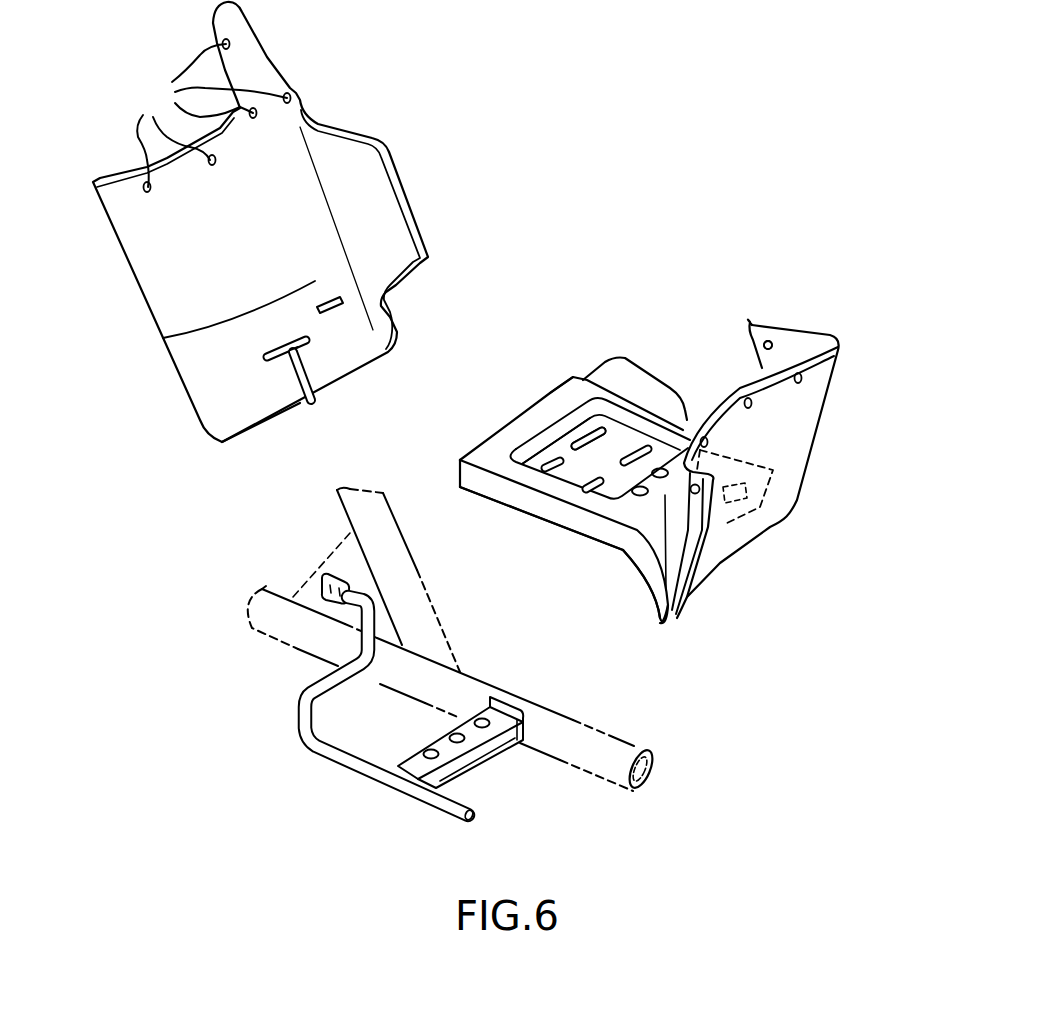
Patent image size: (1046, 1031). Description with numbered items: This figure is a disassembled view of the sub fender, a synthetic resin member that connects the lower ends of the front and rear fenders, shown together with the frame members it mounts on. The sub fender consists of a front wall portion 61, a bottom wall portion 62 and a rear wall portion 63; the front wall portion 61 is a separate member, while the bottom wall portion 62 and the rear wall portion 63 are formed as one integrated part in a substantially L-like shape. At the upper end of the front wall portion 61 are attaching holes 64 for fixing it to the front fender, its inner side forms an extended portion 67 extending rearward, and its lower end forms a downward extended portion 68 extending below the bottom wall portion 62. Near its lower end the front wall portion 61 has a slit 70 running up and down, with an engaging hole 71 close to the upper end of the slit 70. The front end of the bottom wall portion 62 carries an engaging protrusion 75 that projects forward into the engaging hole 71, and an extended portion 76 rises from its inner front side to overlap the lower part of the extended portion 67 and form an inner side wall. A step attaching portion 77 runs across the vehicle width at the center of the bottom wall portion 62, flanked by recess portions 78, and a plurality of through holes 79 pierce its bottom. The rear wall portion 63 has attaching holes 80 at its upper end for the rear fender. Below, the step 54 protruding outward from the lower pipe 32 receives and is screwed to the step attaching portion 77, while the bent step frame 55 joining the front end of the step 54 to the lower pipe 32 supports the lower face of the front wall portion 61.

The lower pipe 32 is at (597, 758).
The step 54 is at (467, 757).
The step frame 55 is at (347, 753).
The front wall portion 61 is at (150, 270).
The bottom wall portion 62 is at (503, 490).
The rear wall portion 63 is at (793, 455).
The attaching hole 64 is at (207, 115).
The extended portion 67 is at (390, 220).
The downward extended portion 68 is at (240, 420).
The slit 70 is at (303, 405).
The engaging hole 71 is at (327, 310).
The engaging protrusion 75 is at (557, 377).
The extended portion 76 is at (627, 383).
The step attaching portion 77 is at (615, 508).
The recess portion 78 is at (550, 447).
The through hole 79 is at (587, 437).
The attaching hole 80 is at (768, 342).